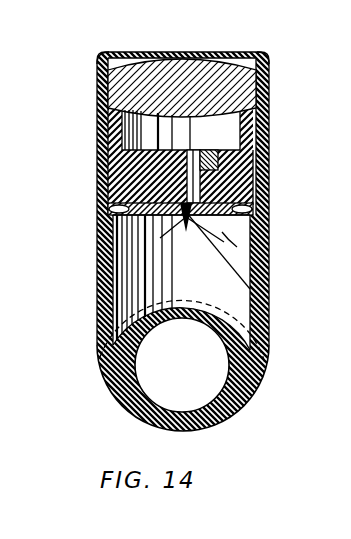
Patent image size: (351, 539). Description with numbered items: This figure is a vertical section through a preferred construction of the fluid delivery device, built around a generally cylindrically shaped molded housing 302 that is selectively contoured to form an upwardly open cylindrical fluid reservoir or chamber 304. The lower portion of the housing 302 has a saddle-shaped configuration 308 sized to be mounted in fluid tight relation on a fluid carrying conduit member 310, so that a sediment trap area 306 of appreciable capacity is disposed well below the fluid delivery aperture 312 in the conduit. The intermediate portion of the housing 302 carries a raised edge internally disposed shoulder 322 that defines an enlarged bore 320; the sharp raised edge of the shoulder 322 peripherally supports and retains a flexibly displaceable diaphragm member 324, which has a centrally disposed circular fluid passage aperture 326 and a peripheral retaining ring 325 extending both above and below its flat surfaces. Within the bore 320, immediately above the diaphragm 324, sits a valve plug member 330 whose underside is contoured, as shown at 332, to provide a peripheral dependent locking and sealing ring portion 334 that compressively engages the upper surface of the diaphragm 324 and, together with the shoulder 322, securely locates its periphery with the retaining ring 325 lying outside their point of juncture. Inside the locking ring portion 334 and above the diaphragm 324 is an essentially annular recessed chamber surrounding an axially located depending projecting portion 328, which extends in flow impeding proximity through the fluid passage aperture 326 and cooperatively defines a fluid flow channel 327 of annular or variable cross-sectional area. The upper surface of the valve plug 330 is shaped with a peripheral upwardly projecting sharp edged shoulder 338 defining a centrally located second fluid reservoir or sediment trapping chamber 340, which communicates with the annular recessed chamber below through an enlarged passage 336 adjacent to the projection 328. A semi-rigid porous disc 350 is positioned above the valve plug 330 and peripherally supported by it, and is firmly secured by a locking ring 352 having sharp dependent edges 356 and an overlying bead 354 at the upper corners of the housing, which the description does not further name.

The molded housing 302 is at (262, 286).
The fluid reservoir or chamber 304 is at (237, 247).
The sediment trap area 306 is at (262, 360).
The saddle-shaped configuration 308 is at (100, 326).
The fluid carrying conduit member 310 is at (208, 428).
The fluid delivery aperture 312 is at (186, 320).
The enlarged bore 320 is at (262, 185).
The raised edge shoulder 322 is at (150, 236).
The diaphragm member 324 is at (128, 258).
The retaining ring 325 is at (160, 214).
The fluid passage aperture 326 is at (108, 290).
The fluid flow channel 327 is at (250, 289).
The depending projecting portion 328 is at (184, 226).
The valve plug member 330 is at (107, 165).
The contoured underside 332 is at (263, 236).
The locking and sealing ring portion 334 is at (110, 205).
The enlarged passage 336 is at (262, 160).
The sharp edged shoulder 338 is at (262, 126).
The second fluid reservoir or sediment trapping chamber 340 is at (165, 128).
The semi-rigid porous disc 350 is at (194, 72).
The locking ring 352 is at (96, 78).
The rim 354 is at (103, 53).
The sharp dependent edges 356 is at (268, 96).